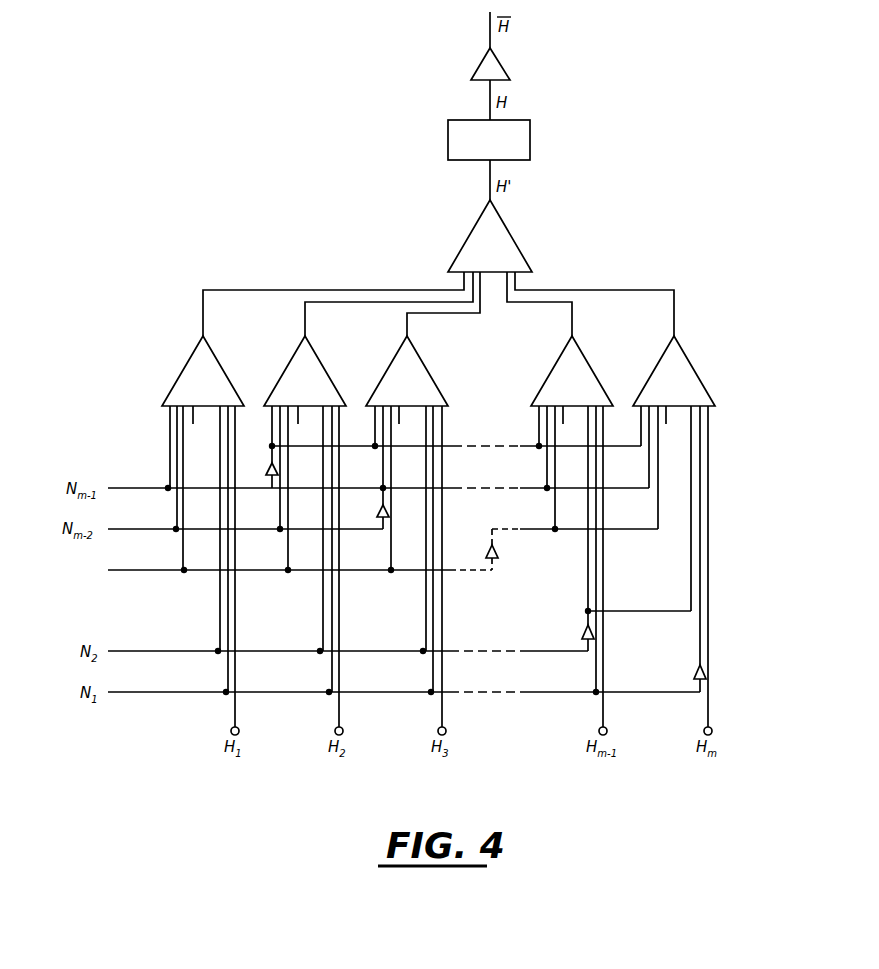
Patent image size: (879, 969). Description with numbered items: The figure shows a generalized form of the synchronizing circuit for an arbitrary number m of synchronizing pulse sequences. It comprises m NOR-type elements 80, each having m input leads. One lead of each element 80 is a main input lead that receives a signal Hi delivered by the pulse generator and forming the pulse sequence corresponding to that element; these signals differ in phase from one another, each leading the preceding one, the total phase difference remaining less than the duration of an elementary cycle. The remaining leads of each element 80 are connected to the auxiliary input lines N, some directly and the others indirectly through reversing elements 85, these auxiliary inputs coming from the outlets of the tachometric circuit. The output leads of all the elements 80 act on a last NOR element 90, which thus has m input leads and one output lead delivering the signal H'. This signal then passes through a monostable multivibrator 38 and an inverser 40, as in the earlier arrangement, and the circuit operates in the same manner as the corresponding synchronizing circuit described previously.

The inverser 40 is at (507, 64).
The monostable multivibrator 38 is at (489, 140).
The last NOR element 90 is at (490, 236).
The NOR elements 80 is at (438, 371).
The reversing elements 85 is at (266, 470).